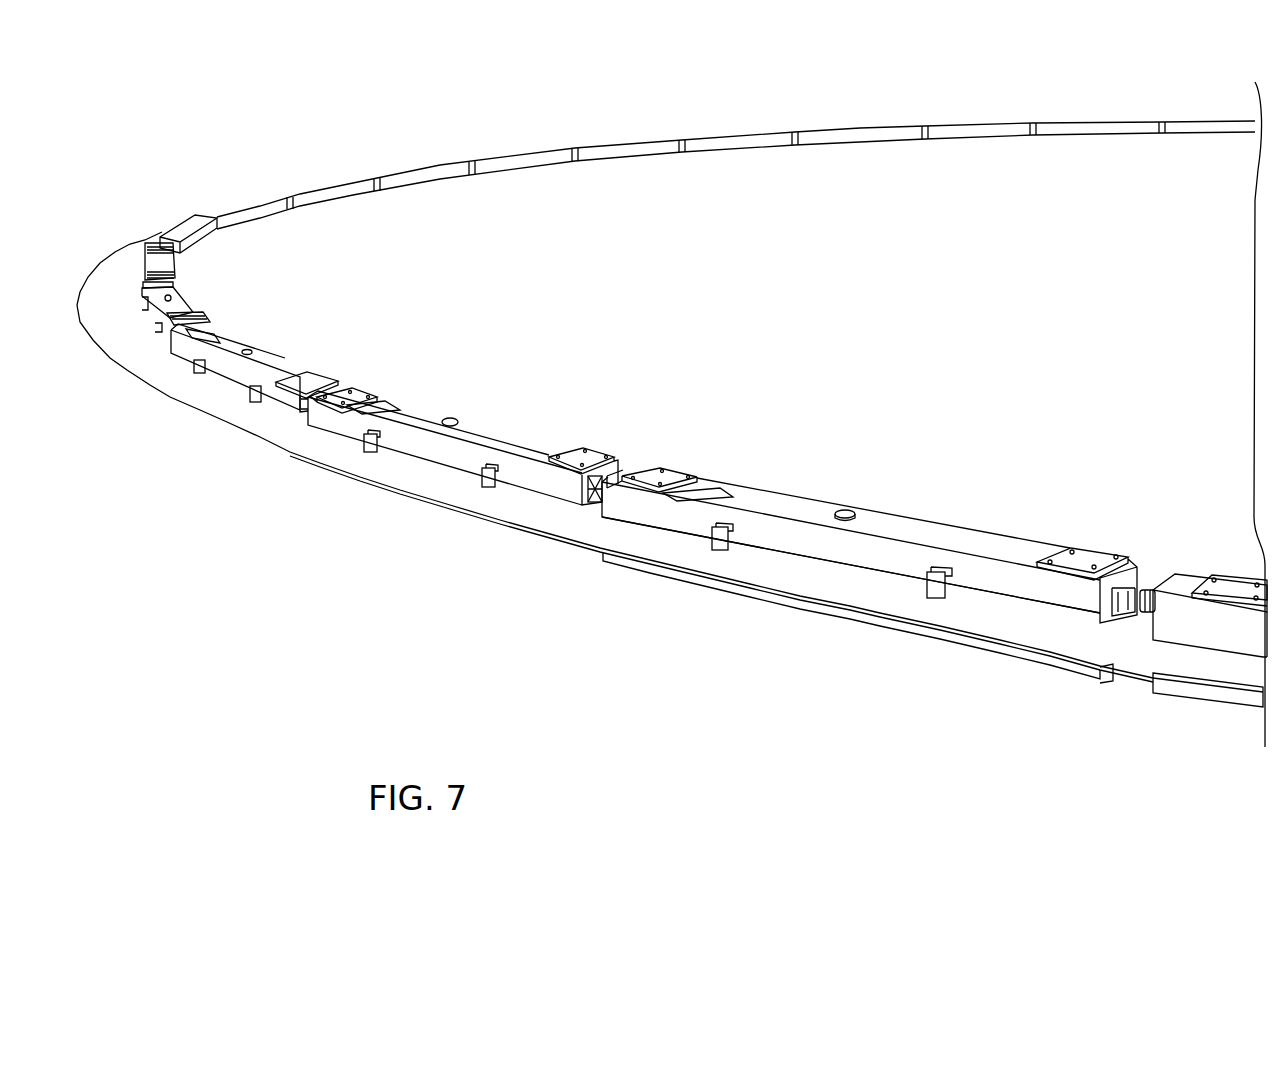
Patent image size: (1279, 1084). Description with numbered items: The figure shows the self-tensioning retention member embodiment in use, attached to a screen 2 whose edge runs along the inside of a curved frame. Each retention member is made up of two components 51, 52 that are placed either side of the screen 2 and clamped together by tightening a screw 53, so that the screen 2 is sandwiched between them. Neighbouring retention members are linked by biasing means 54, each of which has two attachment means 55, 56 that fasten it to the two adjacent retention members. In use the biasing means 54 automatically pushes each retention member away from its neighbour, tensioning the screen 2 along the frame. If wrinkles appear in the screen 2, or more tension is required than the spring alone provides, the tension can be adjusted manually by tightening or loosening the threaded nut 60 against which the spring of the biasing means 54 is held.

The screen 2 is at (430, 213).
The component 51 is at (642, 568).
The component 52 is at (787, 507).
The screw 53 is at (847, 510).
The biasing means 54 is at (590, 500).
The attachment means 55 is at (578, 453).
The attachment means 56 is at (667, 478).
The threaded nut 60 is at (827, 566).